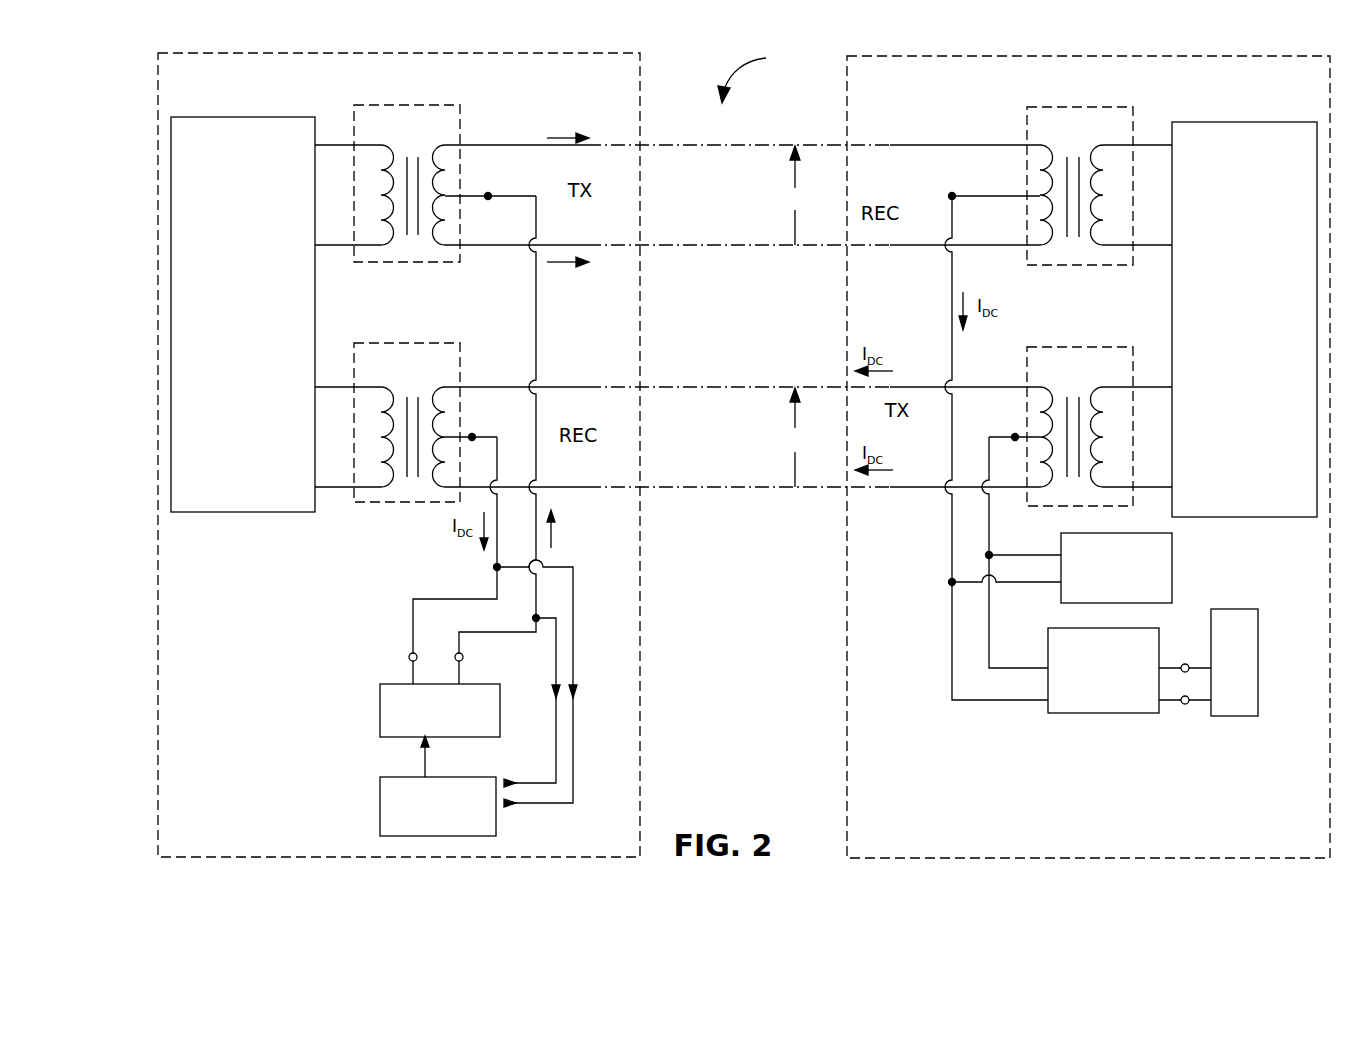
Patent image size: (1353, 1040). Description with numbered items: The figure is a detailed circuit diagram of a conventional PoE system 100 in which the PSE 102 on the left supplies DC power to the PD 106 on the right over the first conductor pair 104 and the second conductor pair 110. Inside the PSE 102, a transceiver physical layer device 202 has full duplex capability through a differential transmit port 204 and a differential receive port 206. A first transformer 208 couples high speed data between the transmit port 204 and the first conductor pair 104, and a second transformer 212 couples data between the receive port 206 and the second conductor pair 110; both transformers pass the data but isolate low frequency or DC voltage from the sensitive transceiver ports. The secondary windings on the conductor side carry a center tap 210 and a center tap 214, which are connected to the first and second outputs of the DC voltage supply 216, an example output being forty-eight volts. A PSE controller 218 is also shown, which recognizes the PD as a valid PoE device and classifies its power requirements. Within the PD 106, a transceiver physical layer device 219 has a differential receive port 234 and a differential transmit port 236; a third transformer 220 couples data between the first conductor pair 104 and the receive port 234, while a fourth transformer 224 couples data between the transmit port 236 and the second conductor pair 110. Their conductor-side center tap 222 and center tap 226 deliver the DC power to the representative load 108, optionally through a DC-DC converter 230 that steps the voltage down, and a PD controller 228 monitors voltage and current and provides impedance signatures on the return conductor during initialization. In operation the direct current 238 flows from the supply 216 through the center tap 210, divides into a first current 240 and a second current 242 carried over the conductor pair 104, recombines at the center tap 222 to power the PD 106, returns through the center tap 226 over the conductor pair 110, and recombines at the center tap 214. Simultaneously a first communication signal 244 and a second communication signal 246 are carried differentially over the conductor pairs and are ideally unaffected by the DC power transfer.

The PoE system 100 is at (764, 71).
The Power Source Equipment (PSE) 102 is at (379, 53).
The first conductor pair 104 is at (707, 213).
The Powered Device (PD) 106 is at (1108, 56).
The load 108 is at (1258, 648).
The second conductor pair 110 is at (707, 455).
The transceiver physical layer device 202 is at (243, 314).
The differential transmit port 204 is at (315, 192).
The differential receive port 206 is at (315, 420).
The first transformer 208 is at (407, 183).
The center tap 210 is at (490, 194).
The second transformer 212 is at (407, 422).
The center tap 214 is at (473, 435).
The DC voltage supply 216 is at (380, 702).
The PSE controller 218 is at (380, 799).
The transceiver physical layer device 219 is at (1244, 319).
The third transformer 220 is at (1080, 186).
The center tap 222 is at (951, 194).
The fourth transformer 224 is at (1080, 426).
The center tap 226 is at (1015, 436).
The PD controller 228 is at (1172, 566).
The DC-DC converter 230 is at (1082, 718).
The differential receive port 234 is at (1172, 196).
The differential transmit port 236 is at (1172, 421).
The direct current 238 is at (571, 535).
The first current 240 is at (558, 133).
The second current 242 is at (578, 305).
The first communication signal 244 is at (795, 195).
The second communication signal 246 is at (795, 437).